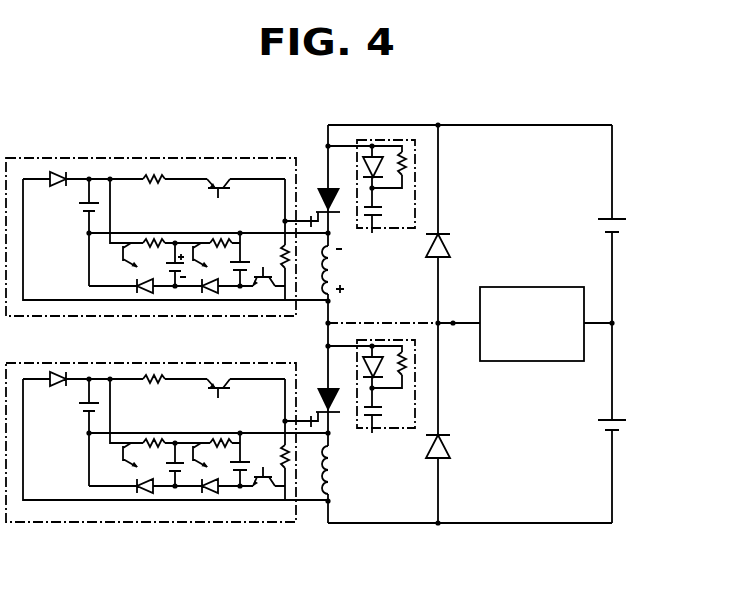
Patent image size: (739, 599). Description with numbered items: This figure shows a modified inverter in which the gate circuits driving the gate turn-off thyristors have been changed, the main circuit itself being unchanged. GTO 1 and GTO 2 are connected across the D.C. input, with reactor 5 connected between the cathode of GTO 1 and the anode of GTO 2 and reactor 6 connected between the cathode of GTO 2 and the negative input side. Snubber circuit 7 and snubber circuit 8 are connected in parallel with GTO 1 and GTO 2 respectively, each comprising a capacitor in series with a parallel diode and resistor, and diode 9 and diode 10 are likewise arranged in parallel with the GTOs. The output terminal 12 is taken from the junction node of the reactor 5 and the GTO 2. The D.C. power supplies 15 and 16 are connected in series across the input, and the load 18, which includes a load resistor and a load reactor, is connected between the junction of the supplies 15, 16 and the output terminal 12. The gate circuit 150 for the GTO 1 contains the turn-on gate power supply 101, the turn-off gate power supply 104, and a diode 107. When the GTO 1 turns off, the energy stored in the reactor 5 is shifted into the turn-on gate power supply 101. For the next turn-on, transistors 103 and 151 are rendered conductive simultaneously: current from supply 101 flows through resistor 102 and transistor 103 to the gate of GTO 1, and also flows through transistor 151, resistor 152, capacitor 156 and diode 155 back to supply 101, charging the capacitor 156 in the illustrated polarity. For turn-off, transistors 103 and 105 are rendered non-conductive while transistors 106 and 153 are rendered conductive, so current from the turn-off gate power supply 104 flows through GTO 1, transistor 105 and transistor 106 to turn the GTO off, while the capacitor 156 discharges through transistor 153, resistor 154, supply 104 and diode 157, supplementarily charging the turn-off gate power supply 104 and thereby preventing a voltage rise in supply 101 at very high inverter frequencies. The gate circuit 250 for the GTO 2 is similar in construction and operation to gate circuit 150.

The GTO 1 is at (325, 189).
The GTO 2 is at (319, 386).
The reactor 5 is at (341, 252).
The reactor 6 is at (344, 474).
The snubber circuit 7 is at (384, 229).
The snubber circuit 8 is at (386, 406).
The diode 9 is at (451, 246).
The diode 10 is at (451, 448).
The output terminal 12 is at (453, 325).
The D.C. power supply 15 is at (600, 228).
The D.C. power supply 16 is at (598, 427).
The load 18 is at (525, 287).
The turn-on gate power supply 101 is at (80, 208).
The resistor 102 is at (151, 175).
The transistor 103 is at (215, 186).
The turn-off gate power supply 104 is at (250, 262).
The transistor 105 is at (290, 272).
The transistor 106 is at (266, 292).
The diode 107 is at (63, 186).
The gate circuit 150 is at (50, 158).
The transistor 151 is at (121, 246).
The resistor 152 is at (148, 240).
The transistor 153 is at (193, 245).
The resistor 154 is at (222, 239).
The diode 155 is at (142, 297).
The capacitor 156 is at (172, 290).
The diode 157 is at (217, 296).
The gate circuit 250 is at (217, 522).